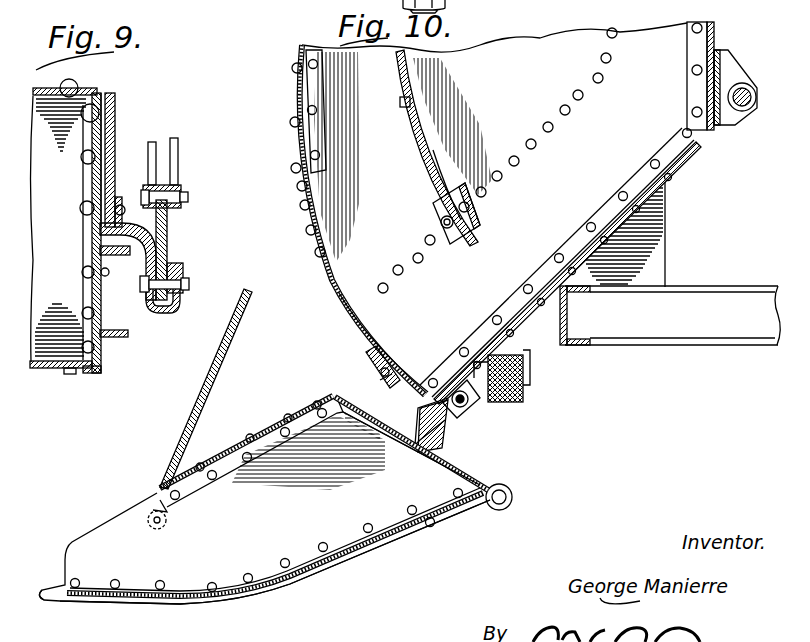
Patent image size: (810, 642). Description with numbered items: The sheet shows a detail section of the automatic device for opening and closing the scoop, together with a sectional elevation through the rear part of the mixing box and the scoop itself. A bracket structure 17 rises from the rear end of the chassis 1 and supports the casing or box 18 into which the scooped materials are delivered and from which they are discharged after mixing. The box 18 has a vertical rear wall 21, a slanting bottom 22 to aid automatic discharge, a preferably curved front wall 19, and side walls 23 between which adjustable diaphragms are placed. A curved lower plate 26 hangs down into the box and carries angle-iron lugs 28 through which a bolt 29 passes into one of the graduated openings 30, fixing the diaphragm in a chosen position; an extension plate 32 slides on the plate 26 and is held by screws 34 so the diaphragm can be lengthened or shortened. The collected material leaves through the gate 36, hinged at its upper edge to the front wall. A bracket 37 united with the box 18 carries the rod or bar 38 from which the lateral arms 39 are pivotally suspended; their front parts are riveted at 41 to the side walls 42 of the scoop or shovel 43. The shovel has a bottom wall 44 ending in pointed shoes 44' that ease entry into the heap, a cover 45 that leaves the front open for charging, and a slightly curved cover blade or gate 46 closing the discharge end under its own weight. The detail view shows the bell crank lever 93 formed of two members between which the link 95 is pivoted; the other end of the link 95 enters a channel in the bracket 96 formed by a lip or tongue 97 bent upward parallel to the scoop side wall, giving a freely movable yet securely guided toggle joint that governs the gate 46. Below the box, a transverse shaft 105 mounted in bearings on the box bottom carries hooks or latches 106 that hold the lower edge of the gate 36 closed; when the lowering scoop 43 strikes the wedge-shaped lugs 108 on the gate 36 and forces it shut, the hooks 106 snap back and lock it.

In FIG. 10, the chassis 1 is at (584, 346).
In FIG. 10, the bracket structure 17 is at (668, 215).
In FIG. 10, the casing or box 18 is at (682, 178).
In FIG. 10, the front wall 19 is at (300, 84).
In FIG. 10, the vertical rear wall 21 is at (714, 31).
In FIG. 10, the slanting bottom 22 is at (613, 198).
In FIG. 10, the side walls 23 is at (518, 38).
In FIG. 10, the lower plate 26 is at (431, 162).
In FIG. 10, the lugs 28 is at (430, 207).
In FIG. 10, the bolt 29 is at (445, 240).
In FIG. 10, the openings 30 is at (529, 138).
In FIG. 10, the extension plate 32 is at (445, 137).
In FIG. 10, the screws 34 is at (404, 108).
In FIG. 10, the gate 36 is at (352, 320).
In FIG. 10, the bracket 37 is at (738, 72).
In FIG. 10, the rod or bar 38 is at (757, 97).
In FIG. 10, the lateral arms 39 is at (447, 433).
In FIG. 9, the rivets 41 is at (104, 337).
In FIG. 9, the side walls 42 is at (99, 128).
In FIG. 10, the side walls 42 is at (278, 571).
In FIG. 9, the scoop or shovel 43 is at (33, 372).
In FIG. 10, the scoop or shovel 43 is at (119, 505).
In FIG. 9, the bottom wall 44 is at (63, 385).
In FIG. 10, the bottom wall 44 is at (275, 542).
In FIG. 10, the pointed shoes 44' is at (47, 612).
In FIG. 9, the cover 45 is at (90, 87).
In FIG. 10, the cover 45 is at (267, 428).
In FIG. 9, the cover blade or gate 46 is at (100, 356).
In FIG. 10, the cover blade or gate 46 is at (431, 472).
In FIG. 9, the angle lever 93 is at (153, 141).
In FIG. 10, the angle lever 93 is at (379, 377).
In FIG. 9, the link 95 is at (170, 225).
In FIG. 9, the bracket 96 is at (146, 300).
In FIG. 9, the lip or tongue 97 is at (172, 265).
In FIG. 10, the transverse pin or shaft 105 is at (483, 402).
In FIG. 10, the hooks or latches 106 is at (438, 444).
In FIG. 10, the lugs 108 is at (366, 355).